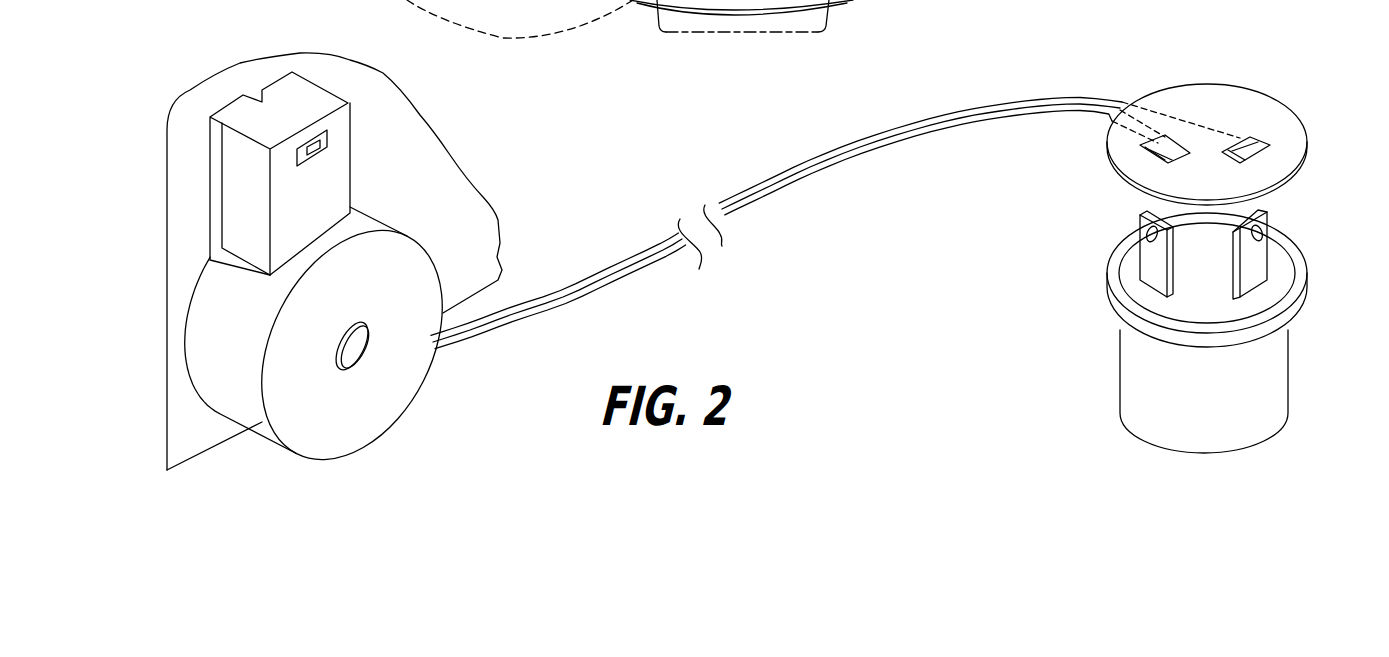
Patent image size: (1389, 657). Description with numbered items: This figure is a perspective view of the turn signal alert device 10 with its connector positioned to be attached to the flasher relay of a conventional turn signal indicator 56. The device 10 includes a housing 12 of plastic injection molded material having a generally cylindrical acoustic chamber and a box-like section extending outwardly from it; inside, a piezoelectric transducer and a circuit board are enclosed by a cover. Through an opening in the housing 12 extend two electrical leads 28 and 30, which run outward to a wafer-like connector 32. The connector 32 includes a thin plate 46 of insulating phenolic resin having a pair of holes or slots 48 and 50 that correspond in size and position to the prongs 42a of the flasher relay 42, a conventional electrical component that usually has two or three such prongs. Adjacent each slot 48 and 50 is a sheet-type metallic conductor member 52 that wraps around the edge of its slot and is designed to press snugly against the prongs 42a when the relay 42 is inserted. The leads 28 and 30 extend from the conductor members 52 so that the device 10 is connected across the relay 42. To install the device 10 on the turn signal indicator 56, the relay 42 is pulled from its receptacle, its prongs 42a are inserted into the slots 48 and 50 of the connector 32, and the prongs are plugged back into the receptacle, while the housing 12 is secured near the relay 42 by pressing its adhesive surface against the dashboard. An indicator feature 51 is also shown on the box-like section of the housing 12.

The turn signal alert device 10 is at (432, 217).
The housing 12 is at (260, 423).
The electrical lead 28 is at (990, 108).
The electrical lead 30 is at (947, 127).
The wafer-like connector 32 is at (1060, 174).
The flasher relay 42 is at (1275, 370).
The prongs 42a is at (1143, 263).
The thin plate 46 is at (1273, 112).
The slot 48 is at (1150, 150).
The slot 50 is at (1260, 140).
The indicator window 51 is at (327, 138).
The conductor member 52 is at (1164, 135).
The automotive turn signal indicator 56 is at (630, 19).